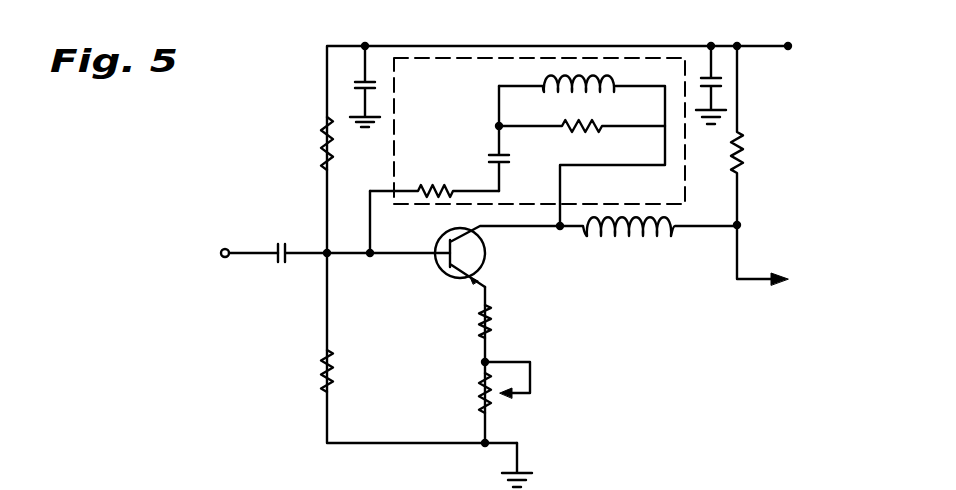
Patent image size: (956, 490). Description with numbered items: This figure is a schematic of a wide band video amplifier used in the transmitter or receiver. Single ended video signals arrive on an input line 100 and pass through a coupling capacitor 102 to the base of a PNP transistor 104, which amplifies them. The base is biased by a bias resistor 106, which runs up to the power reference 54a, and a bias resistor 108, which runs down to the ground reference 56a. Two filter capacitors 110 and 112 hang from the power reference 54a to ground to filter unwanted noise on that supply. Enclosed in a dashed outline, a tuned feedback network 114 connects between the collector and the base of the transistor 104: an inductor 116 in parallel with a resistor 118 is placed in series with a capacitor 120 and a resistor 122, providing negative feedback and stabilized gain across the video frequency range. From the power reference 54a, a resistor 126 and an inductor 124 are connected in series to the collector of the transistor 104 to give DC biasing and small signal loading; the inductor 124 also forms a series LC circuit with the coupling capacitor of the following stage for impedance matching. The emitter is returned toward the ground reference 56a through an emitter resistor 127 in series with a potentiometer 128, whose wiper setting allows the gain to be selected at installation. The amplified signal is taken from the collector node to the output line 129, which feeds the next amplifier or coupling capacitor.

The power reference 54a is at (772, 44).
The ground reference 56a is at (519, 442).
The input line 100 is at (251, 250).
The coupling capacitor 102 is at (276, 262).
The transistor 104 is at (486, 259).
The bias resistor 106 is at (320, 139).
The bias resistor 108 is at (318, 368).
The filter capacitor 110 is at (352, 82).
The filter capacitor 112 is at (722, 88).
The tuned feedback network 114 is at (483, 52).
The inductor 116 is at (584, 76).
The resistor 118 is at (580, 128).
The capacitor 120 is at (492, 157).
The resistor 122 is at (437, 197).
The inductor 124 is at (634, 238).
The resistor 126 is at (745, 163).
The emitter resistor 127 is at (492, 327).
The potentiometer 128 is at (476, 402).
The output line 129 is at (754, 283).